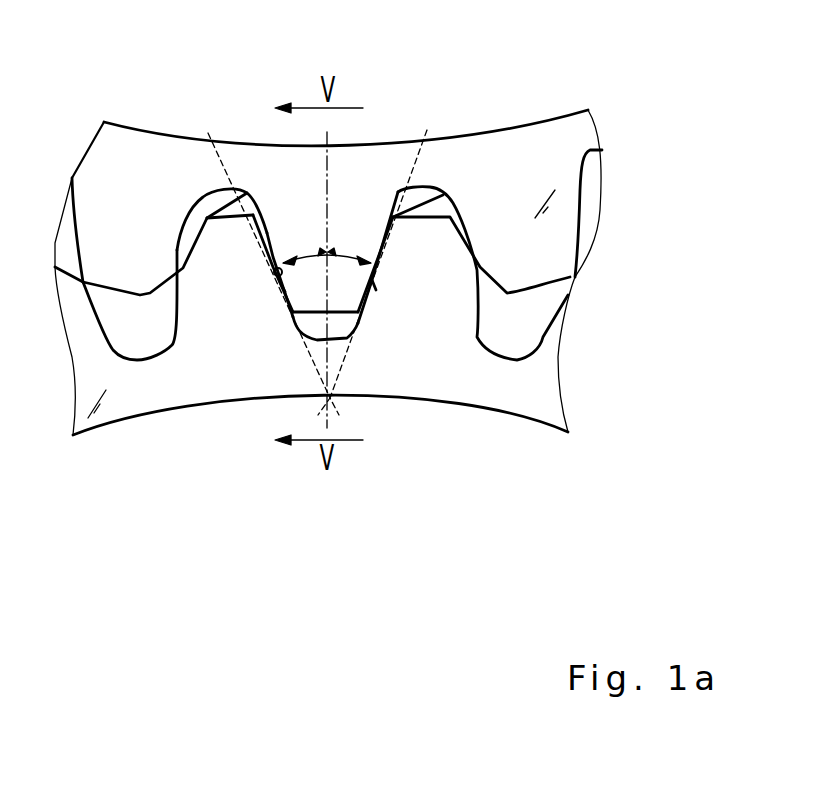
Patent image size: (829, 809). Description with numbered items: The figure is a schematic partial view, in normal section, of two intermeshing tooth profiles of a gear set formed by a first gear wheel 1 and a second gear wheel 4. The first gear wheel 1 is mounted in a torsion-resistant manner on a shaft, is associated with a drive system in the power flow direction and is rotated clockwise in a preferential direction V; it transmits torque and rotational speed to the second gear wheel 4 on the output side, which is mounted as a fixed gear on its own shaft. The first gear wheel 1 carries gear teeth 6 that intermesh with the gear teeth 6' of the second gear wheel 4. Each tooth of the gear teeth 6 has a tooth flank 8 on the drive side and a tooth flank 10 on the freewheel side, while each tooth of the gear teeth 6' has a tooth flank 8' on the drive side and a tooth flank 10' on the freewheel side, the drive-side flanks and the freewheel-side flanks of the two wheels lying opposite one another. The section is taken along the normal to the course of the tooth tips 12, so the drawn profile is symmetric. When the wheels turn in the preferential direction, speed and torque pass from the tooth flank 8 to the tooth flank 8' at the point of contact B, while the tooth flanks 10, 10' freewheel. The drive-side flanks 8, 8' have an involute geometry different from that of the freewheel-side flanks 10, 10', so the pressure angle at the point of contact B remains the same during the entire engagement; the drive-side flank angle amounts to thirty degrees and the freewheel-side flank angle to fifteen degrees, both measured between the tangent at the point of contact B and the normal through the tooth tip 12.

The first gear wheel 1 is at (475, 118).
The second gear wheel 4 is at (537, 445).
The gear teeth 6 is at (159, 180).
The gear teeth 6' is at (481, 385).
The tooth flank 8 is at (301, 170).
The tooth flank 8' is at (229, 432).
The tooth flank 10 is at (378, 162).
The tooth flank 10' is at (416, 431).
The tooth tip 12 is at (222, 209).
The point of contact B is at (274, 275).